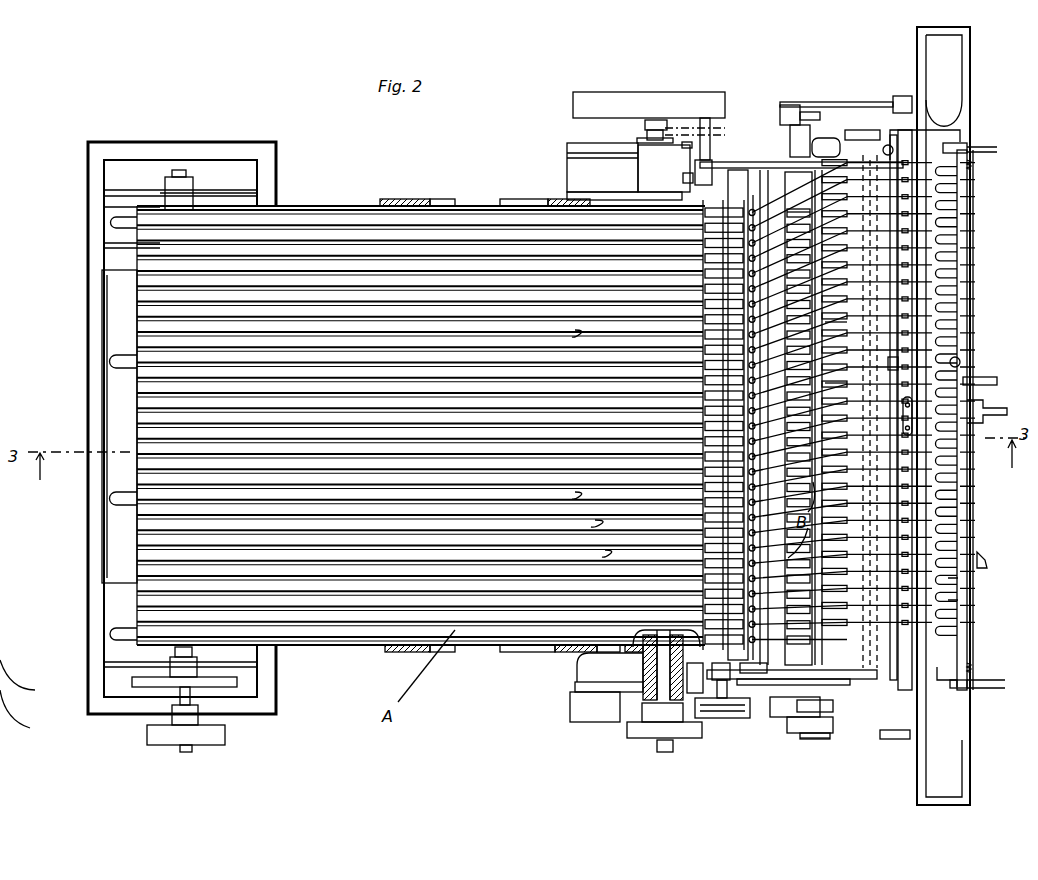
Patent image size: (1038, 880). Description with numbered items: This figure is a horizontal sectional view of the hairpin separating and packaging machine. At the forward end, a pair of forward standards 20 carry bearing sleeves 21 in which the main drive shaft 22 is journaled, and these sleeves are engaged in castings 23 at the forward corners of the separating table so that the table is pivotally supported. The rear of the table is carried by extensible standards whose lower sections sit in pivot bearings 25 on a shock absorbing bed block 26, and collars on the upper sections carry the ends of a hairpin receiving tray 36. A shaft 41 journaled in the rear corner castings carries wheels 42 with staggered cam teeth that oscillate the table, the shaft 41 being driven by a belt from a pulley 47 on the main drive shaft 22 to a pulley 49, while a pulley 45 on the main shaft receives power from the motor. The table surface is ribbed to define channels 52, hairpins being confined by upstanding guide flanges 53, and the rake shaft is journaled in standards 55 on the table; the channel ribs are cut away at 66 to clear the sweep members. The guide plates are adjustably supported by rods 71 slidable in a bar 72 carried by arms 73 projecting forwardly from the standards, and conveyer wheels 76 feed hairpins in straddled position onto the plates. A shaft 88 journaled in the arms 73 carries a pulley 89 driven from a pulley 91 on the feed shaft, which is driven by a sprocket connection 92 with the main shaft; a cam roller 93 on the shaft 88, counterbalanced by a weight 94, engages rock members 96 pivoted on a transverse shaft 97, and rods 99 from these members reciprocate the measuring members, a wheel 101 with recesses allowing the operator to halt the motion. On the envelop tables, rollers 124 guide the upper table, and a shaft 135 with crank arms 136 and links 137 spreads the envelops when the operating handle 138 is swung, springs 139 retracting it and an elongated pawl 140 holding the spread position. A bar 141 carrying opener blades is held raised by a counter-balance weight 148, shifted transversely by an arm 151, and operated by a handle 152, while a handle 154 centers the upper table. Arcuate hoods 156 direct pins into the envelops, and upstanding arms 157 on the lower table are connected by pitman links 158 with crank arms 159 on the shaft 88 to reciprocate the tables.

The forward standards 20 is at (586, 168).
The bearing sleeves 21 is at (638, 142).
The main drive shaft 22 is at (650, 690).
The castings 23 is at (555, 200).
The pivot bearings 25 is at (165, 192).
The bed block 26 is at (226, 148).
The hairpin receiving tray 36 is at (118, 309).
The shaft 41 is at (185, 754).
The wheels 42 is at (196, 212).
The pulley 45 is at (598, 104).
The pulley 47 is at (690, 738).
The pulley 49 is at (160, 733).
The channels 52 is at (148, 408).
The guide flanges 53 is at (306, 208).
The standards 55 is at (400, 200).
The cut away portions 66 is at (610, 335).
The rods 71 is at (740, 210).
The bar 72 is at (752, 200).
The arms 73 is at (780, 680).
The conveyer wheels 76 is at (700, 305).
The shaft 88 is at (782, 105).
The pulley 89 is at (830, 706).
The pulley 91 is at (748, 712).
The sprocket connection 92 is at (705, 118).
The cam roller 93 is at (803, 417).
The weight 94 is at (855, 125).
The rock members 96 is at (798, 206).
The transverse shaft 97 is at (826, 322).
The rods 99 is at (826, 383).
The wheel 101 is at (830, 680).
The rollers 124 is at (985, 552).
The shaft 135 is at (975, 190).
The crank arms 136 is at (975, 230).
The links 137 is at (975, 255).
The operating handle 138 is at (985, 378).
The springs 139 is at (972, 172).
The pawl 140 is at (975, 148).
The bar 141 is at (975, 330).
The counter-balance weight 148 is at (850, 138).
The arm 151 is at (952, 122).
The handle 152 is at (961, 371).
The handle 154 is at (963, 428).
The arcuate hoods 156 is at (960, 600).
The upstanding arms 157 is at (907, 96).
The pitman links 158 is at (858, 102).
The crank arms 159 is at (803, 96).